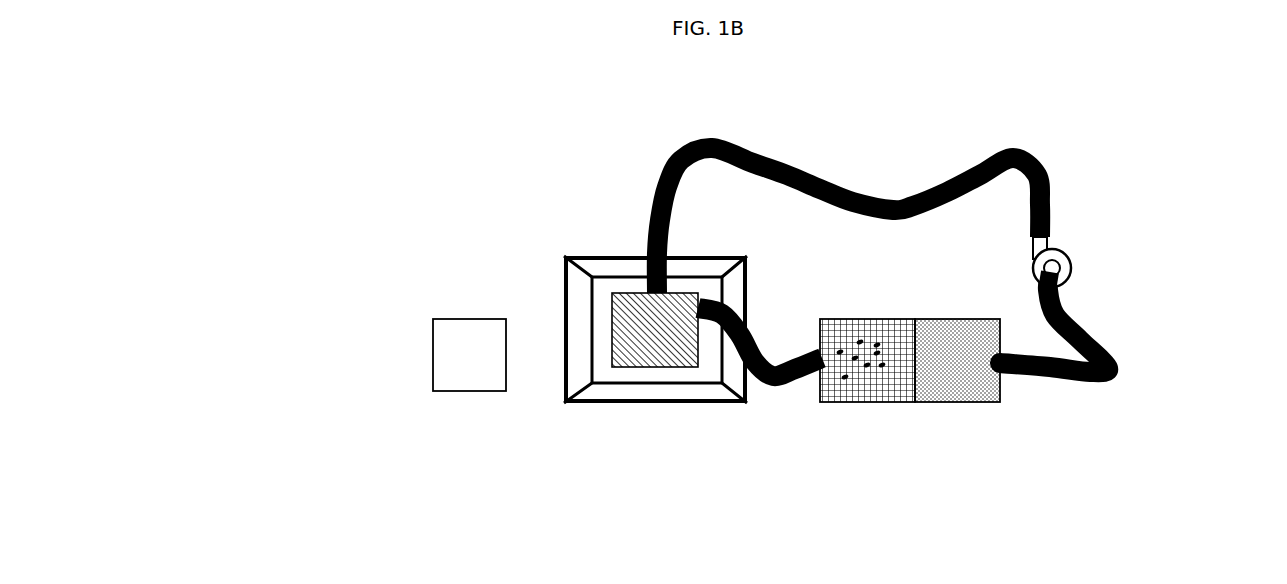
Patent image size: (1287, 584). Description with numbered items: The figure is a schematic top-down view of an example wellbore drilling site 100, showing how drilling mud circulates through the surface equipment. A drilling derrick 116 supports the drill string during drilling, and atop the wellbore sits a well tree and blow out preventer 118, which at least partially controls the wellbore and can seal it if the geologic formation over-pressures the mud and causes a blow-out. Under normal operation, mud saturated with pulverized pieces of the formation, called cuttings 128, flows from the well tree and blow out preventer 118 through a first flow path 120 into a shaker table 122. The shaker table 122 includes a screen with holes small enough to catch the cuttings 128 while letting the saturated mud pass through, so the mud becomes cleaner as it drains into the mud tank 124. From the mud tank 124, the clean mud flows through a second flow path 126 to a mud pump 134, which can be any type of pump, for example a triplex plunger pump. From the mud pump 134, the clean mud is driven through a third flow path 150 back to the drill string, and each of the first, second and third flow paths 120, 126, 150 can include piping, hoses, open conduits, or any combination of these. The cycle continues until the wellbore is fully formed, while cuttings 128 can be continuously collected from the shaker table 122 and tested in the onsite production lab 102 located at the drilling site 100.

The wellbore drilling site 100 is at (477, 150).
The onsite production lab 102 is at (470, 318).
The drilling derrick 116 is at (619, 276).
The well tree and blow out preventer (BOP) 118 is at (612, 328).
The first flow path 120 is at (772, 360).
The shaker table 122 is at (857, 320).
The mud tank 124 is at (932, 318).
The second flow path 126 is at (1127, 363).
The cuttings 128 is at (883, 347).
The mud pump 134 is at (1073, 268).
The third flow path 150 is at (833, 185).